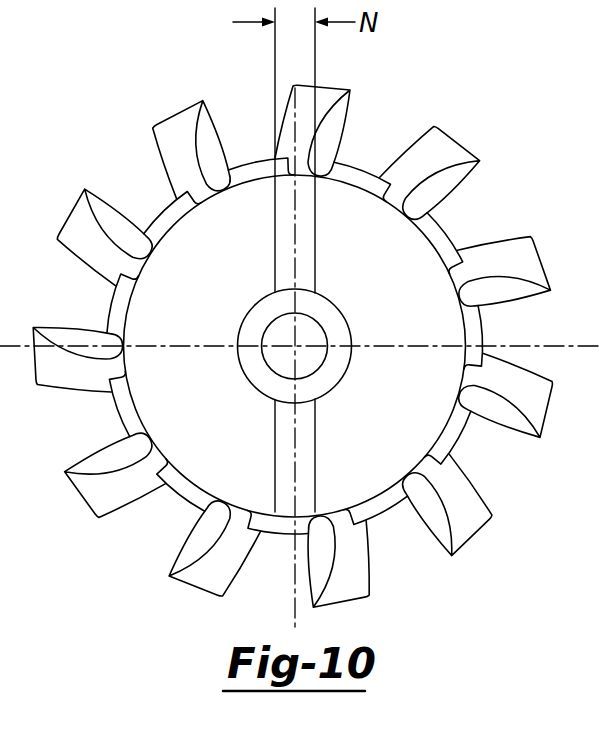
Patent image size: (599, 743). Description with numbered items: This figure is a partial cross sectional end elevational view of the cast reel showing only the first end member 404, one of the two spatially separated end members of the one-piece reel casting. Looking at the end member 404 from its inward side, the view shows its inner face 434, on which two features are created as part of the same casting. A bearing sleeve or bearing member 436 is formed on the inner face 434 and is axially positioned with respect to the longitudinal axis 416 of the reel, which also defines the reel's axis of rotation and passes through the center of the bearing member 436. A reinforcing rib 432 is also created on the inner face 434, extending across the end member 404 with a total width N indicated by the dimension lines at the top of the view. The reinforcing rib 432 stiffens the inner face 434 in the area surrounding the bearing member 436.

The first end member 404 is at (389, 519).
The longitudinal axis 416 is at (294, 346).
The reinforcing rib 432 is at (307, 245).
The inner face 434 is at (200, 468).
The bearing member 436 is at (330, 378).